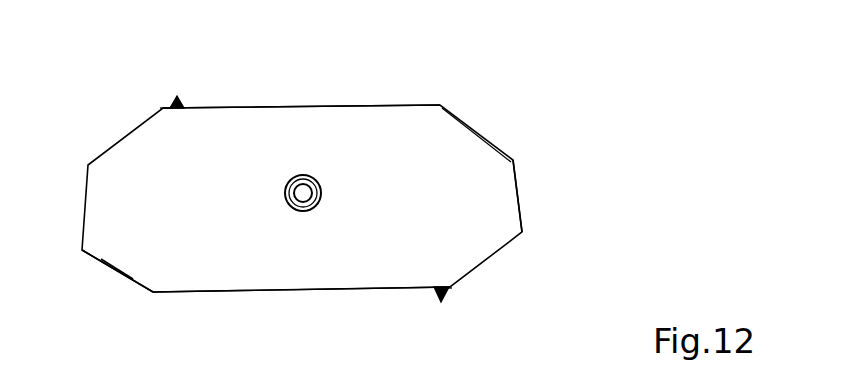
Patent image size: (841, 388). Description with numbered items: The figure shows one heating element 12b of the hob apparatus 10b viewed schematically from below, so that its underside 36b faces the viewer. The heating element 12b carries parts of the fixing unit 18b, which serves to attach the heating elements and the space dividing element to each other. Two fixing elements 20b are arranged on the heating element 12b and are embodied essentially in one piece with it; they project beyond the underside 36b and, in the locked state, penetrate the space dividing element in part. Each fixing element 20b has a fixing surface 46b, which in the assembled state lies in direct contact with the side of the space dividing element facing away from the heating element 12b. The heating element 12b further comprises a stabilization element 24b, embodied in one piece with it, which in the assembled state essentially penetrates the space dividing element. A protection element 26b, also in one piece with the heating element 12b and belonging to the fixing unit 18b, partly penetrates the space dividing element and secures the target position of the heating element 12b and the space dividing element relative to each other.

The hob apparatus 10b is at (569, 80).
The heating element 12b is at (448, 143).
The fixing unit 18b is at (194, 98).
The fixing element 20b is at (172, 101).
The stabilization element 24b is at (301, 174).
The protection element 26b is at (105, 263).
The underside 36b is at (394, 143).
The fixing surface 46b is at (178, 97).